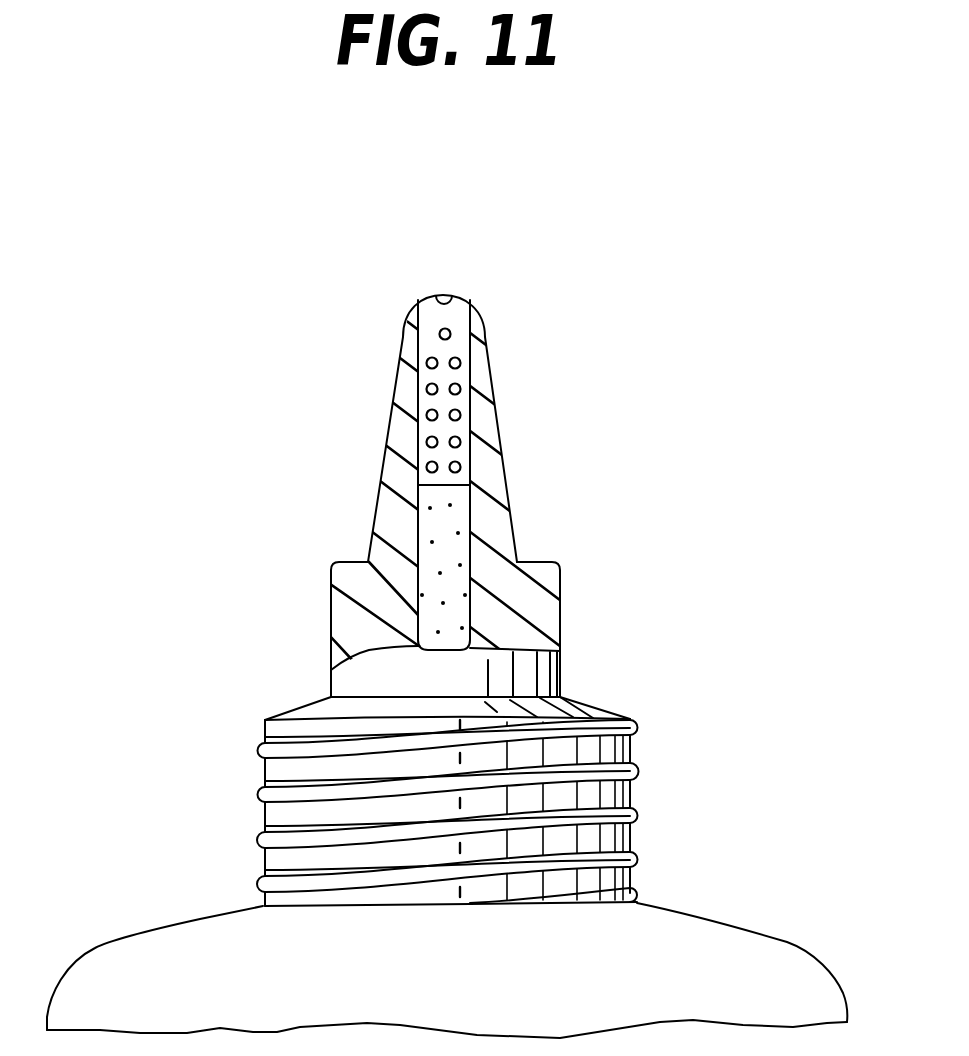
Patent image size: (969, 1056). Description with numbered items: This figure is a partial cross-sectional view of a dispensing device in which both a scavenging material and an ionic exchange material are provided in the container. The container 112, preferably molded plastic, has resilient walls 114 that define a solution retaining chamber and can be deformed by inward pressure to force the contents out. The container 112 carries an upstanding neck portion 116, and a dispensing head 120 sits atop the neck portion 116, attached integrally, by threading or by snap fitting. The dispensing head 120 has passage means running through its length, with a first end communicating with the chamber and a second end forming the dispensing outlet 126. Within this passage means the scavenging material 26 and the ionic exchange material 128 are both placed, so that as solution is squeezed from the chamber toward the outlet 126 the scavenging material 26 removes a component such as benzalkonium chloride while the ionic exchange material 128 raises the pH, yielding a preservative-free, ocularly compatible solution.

The container 112 is at (447, 844).
The resilient walls 114 is at (138, 965).
The neck portion 116 is at (267, 720).
The dispensing head 120 is at (387, 455).
The scavenging material 26 is at (466, 550).
The ionic exchange material 128 is at (473, 380).
The dispensing outlet 126 is at (448, 292).